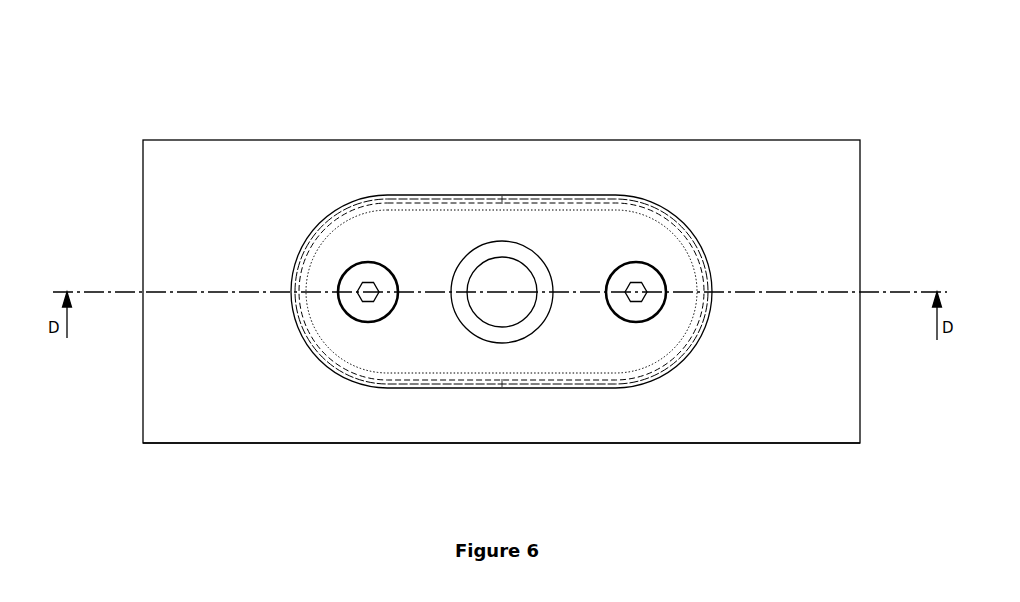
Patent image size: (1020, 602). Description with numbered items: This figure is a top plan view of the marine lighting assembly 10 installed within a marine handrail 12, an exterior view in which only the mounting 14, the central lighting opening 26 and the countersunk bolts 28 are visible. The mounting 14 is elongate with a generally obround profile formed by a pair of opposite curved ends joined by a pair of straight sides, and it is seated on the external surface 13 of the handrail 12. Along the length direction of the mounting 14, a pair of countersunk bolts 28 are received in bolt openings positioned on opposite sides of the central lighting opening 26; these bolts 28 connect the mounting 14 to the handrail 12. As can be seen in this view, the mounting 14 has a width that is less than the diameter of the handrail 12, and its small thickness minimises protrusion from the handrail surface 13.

The marine lighting assembly 10 is at (330, 186).
The marine handrail 12 is at (183, 457).
The external surface 13 is at (258, 400).
The mounting 14 is at (411, 358).
The central lighting opening 26 is at (541, 328).
The countersunk bolts 28 is at (377, 268).